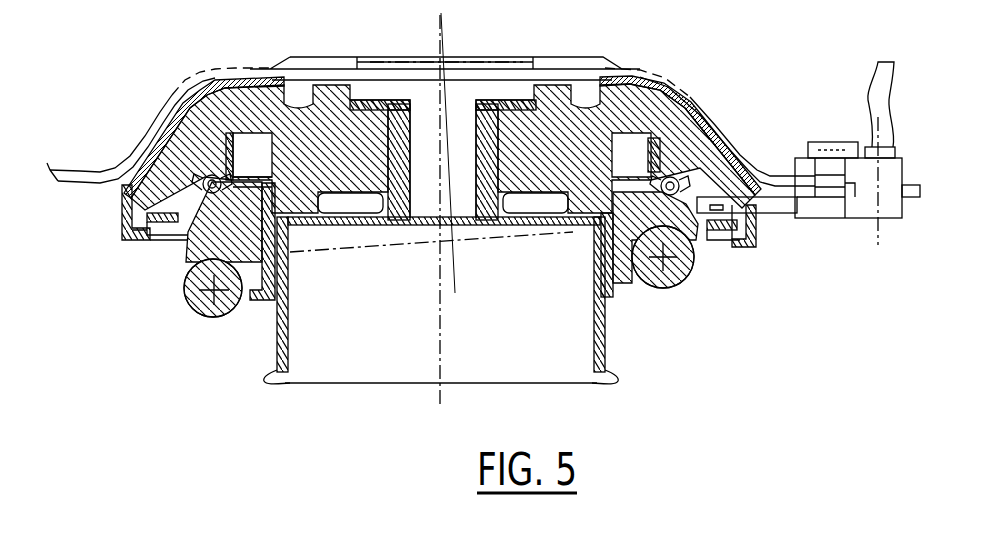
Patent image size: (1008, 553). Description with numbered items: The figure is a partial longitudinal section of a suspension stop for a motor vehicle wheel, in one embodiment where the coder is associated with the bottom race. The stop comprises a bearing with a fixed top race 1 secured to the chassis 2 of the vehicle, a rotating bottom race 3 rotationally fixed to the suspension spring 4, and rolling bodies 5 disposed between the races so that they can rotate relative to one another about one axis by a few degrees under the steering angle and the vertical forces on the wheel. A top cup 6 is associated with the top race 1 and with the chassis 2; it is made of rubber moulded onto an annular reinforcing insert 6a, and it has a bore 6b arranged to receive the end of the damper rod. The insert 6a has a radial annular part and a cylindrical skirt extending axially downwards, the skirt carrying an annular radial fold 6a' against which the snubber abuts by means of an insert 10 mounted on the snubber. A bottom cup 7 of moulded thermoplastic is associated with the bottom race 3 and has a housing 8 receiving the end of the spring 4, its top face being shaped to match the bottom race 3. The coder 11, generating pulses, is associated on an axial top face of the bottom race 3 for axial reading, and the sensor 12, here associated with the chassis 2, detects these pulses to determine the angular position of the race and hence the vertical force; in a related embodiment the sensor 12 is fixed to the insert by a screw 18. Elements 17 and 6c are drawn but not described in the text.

The fixed top race 1 is at (232, 138).
The chassis 2 is at (557, 65).
The rotating bottom race 3 is at (712, 232).
The suspension spring 4 is at (223, 320).
The rolling bodies 5 is at (177, 123).
The top cup 6 is at (337, 100).
The annular reinforcing insert 6a is at (441, 40).
The annular radial fold 6a' is at (444, 271).
The bore 6b is at (520, 347).
The bracket portion 6c is at (737, 242).
The bottom cup 7 is at (193, 257).
The housing 8 is at (200, 305).
The insert 10 is at (262, 376).
The coder 11 is at (163, 227).
The sensor 12 is at (822, 207).
The bracket 17 is at (123, 228).
The screw 18 is at (828, 143).